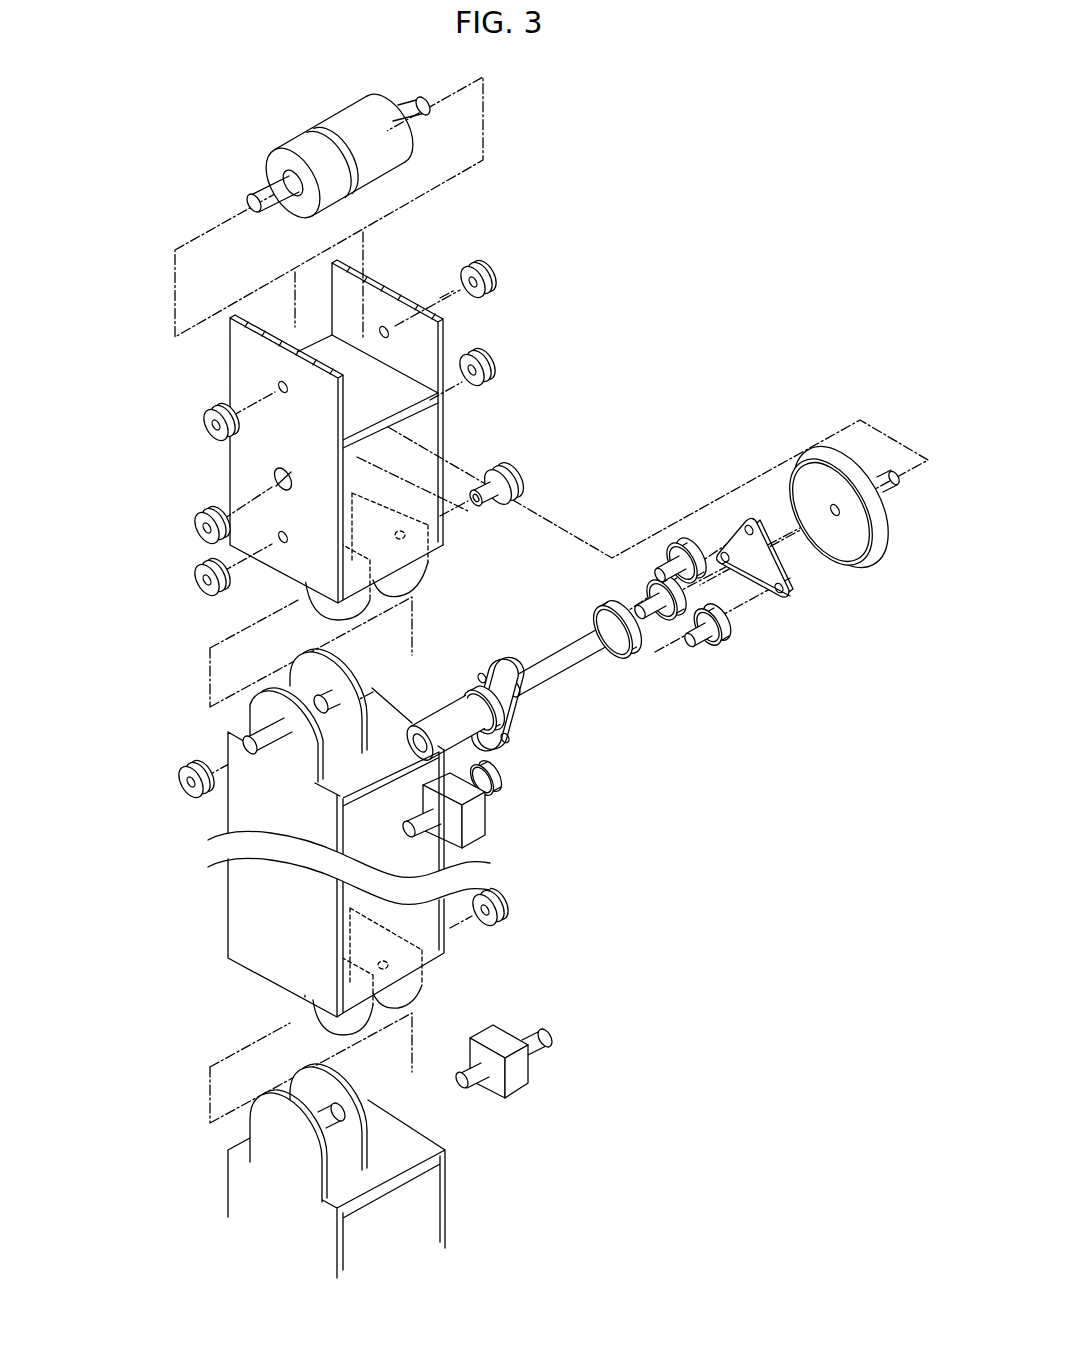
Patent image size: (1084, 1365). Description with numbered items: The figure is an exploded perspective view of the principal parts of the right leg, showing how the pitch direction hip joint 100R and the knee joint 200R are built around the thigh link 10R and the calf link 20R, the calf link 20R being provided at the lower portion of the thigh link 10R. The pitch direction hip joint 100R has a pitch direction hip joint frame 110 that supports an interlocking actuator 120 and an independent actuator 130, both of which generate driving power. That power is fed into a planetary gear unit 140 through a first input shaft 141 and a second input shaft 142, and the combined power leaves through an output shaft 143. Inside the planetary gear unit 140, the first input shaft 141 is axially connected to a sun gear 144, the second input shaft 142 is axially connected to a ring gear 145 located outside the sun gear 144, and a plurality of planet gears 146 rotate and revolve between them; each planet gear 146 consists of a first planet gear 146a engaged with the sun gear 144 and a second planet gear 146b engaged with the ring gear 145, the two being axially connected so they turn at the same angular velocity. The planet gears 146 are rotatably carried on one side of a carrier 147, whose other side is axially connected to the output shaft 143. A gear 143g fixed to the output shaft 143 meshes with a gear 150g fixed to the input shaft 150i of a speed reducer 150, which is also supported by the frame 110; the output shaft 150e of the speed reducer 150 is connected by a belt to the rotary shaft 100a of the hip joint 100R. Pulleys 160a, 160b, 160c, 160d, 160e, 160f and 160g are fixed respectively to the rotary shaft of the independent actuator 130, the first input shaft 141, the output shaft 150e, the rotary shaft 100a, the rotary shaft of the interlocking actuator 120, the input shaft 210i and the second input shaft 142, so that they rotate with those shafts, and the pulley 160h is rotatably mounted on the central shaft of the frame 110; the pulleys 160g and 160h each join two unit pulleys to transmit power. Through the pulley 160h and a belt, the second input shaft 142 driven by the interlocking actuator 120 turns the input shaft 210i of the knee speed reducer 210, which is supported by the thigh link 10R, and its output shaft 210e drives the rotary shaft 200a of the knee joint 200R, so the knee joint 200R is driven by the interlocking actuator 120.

The pitch direction hip joint 100R is at (501, 503).
The pitch direction hip joint frame 110 is at (240, 373).
The interlocking actuator 120 is at (346, 111).
The independent actuator 130 is at (292, 138).
The planetary gear unit 140 is at (655, 579).
The first input shaft 141 is at (538, 696).
The second input shaft 142 is at (886, 468).
The output shaft 143 is at (441, 735).
The gear 143g is at (470, 697).
The sun gear 144 is at (640, 652).
The ring gear 145 is at (840, 499).
The planet gear 146 is at (740, 653).
The first planet gear 146a is at (653, 590).
The second planet gear 146b is at (678, 548).
The carrier 147 is at (520, 735).
The speed reducer 150 is at (509, 827).
The output shaft 150e is at (447, 848).
The gear 150g is at (500, 782).
The input shaft 150i is at (497, 800).
The pulley 160a is at (203, 428).
The pulley 160b is at (195, 532).
The pulley 160c is at (195, 585).
The pulley 160d is at (176, 784).
The pulley 160e is at (493, 279).
The pulley 160f is at (503, 912).
The pulley 160g is at (493, 366).
The pulley 160h is at (520, 482).
The rotary shaft 100a is at (245, 742).
The thigh link 10R is at (314, 842).
The knee joint 200R is at (545, 1057).
The rotary shaft 200a is at (312, 1116).
The speed reducer 210 is at (524, 1079).
The output shaft 210e is at (466, 1085).
The input shaft 210i is at (548, 1035).
The calf link 20R is at (296, 1162).